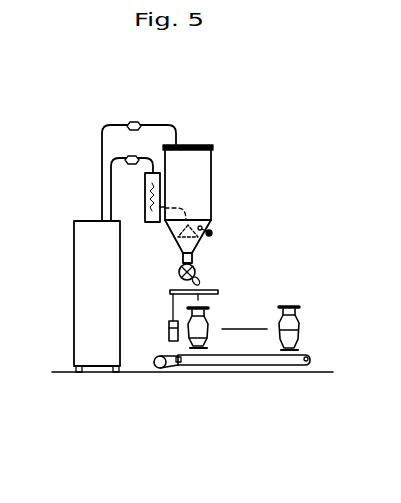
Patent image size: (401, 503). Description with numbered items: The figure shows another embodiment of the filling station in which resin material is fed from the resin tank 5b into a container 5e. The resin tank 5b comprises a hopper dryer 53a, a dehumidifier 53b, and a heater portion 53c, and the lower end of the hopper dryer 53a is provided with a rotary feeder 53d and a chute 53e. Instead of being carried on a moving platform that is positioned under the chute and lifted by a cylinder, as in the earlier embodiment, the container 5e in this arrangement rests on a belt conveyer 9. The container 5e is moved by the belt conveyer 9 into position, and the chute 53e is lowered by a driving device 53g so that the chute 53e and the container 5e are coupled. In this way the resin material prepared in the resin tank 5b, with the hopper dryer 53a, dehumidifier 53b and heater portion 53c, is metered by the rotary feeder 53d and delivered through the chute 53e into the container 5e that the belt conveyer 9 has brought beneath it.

The resin tank 5b is at (248, 190).
The container 5e is at (209, 324).
The belt conveyer 9 is at (222, 362).
The hopper dryer 53a is at (211, 157).
The dehumidifier 53b is at (75, 230).
The heater portion 53c is at (150, 222).
The rotary feeder 53d is at (195, 266).
The chute 53e is at (186, 282).
The driving device 53g is at (169, 329).